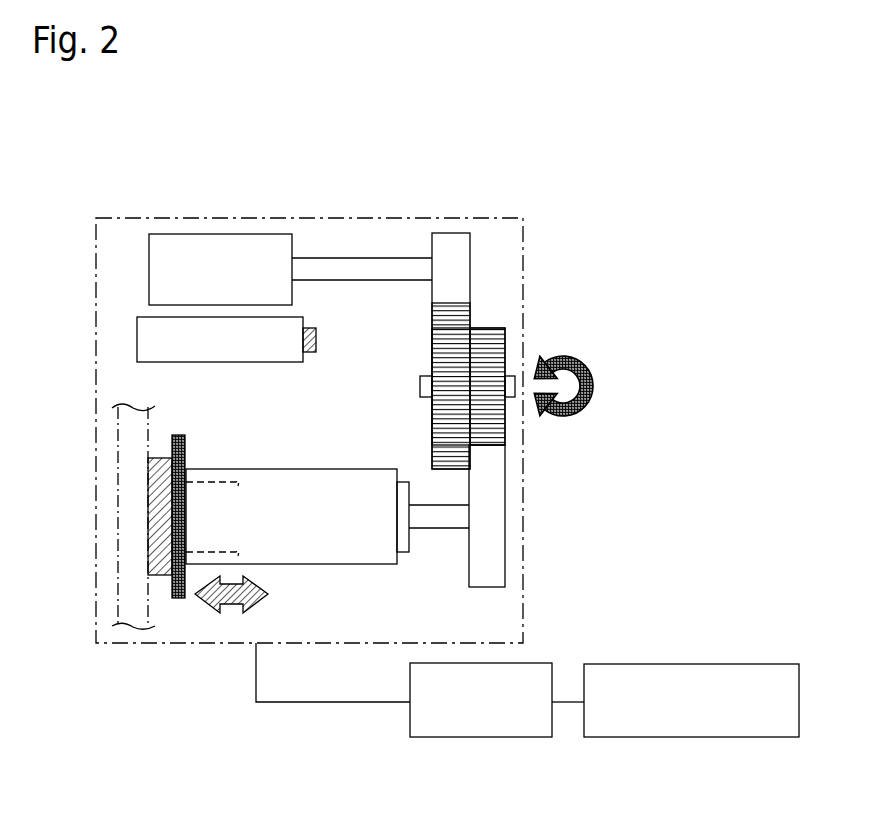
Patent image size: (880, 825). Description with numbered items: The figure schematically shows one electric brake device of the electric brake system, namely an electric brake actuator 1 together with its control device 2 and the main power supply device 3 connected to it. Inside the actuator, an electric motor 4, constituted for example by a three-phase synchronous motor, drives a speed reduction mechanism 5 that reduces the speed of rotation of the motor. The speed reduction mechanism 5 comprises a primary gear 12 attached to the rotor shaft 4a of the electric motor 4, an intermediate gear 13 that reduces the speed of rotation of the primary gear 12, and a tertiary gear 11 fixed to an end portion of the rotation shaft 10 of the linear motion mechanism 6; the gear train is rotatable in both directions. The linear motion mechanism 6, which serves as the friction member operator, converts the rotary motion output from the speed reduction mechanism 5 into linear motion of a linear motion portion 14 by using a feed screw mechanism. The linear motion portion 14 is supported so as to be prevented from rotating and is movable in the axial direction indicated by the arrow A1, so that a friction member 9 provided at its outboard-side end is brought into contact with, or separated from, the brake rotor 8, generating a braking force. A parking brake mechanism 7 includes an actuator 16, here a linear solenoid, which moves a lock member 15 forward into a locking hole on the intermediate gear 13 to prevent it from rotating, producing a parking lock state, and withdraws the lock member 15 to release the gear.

The electric brake actuator 1 is at (97, 283).
The control device 2 is at (533, 663).
The main power supply device 3 is at (663, 664).
The electric motor 4 is at (225, 243).
The rotor shaft 4a is at (307, 262).
The speed reduction mechanism 5 is at (554, 389).
The linear motion mechanism 6 is at (365, 557).
The parking brake mechanism 7 is at (226, 387).
The brake rotor 8 is at (130, 428).
The friction member 9 is at (158, 567).
The rotation shaft 10 is at (442, 520).
The tertiary gear 11 is at (551, 516).
The primary gear 12 is at (458, 242).
The intermediate gear 13 is at (513, 431).
The linear motion portion 14 is at (180, 480).
The lock member 15 is at (286, 373).
The actuator 16 is at (218, 362).
The axial direction arrow A1 is at (268, 597).